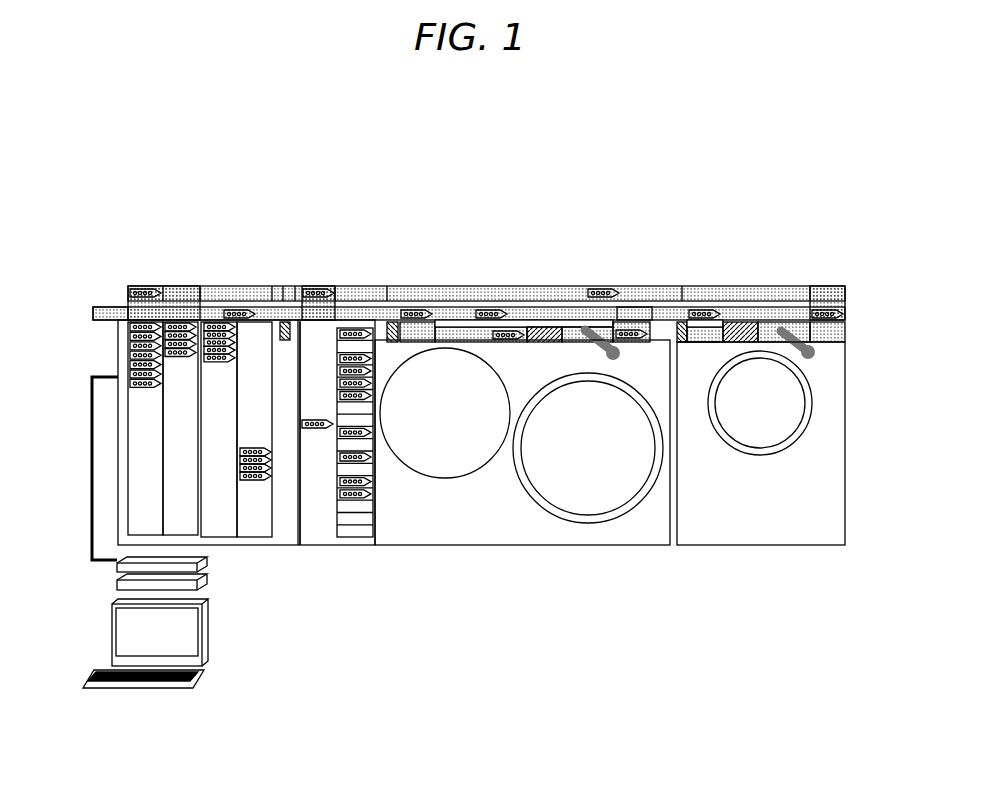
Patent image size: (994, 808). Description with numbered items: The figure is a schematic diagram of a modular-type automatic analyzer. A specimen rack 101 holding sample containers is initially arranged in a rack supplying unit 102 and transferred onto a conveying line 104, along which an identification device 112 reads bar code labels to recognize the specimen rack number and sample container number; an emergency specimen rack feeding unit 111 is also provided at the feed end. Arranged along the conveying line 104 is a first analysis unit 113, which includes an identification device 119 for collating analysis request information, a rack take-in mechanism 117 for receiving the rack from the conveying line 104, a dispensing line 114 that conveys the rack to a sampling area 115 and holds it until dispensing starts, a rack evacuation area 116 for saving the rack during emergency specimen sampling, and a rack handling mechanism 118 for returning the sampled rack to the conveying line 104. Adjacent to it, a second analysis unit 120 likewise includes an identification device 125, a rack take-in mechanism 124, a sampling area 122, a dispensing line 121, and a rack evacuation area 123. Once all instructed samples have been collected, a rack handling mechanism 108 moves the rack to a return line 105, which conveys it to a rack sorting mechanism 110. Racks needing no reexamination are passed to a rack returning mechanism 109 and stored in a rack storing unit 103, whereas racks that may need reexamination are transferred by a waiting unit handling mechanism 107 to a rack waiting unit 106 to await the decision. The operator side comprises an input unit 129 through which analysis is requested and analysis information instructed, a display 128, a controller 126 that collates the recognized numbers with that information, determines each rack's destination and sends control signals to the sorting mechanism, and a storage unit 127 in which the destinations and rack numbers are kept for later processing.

The specimen rack 101 is at (245, 515).
The rack supplying unit 102 is at (252, 480).
The rack storing unit 103 is at (182, 477).
The conveying line 104 is at (524, 307).
The return line 105 is at (358, 286).
The rack waiting unit 106 is at (348, 525).
The waiting unit handling mechanism 107 is at (318, 515).
The rack handling mechanism 108 is at (833, 286).
The rack returning mechanism 109 is at (169, 286).
The rack sorting mechanism 110 is at (313, 286).
The emergency specimen rack feeding unit 111 is at (106, 305).
The identification device 112 is at (283, 305).
The first analysis unit 113 is at (508, 512).
The dispensing line 114 is at (465, 332).
The sampling area 115 is at (575, 332).
The rack evacuation area 116 is at (543, 332).
The rack take-in mechanism 117 is at (422, 312).
The rack handling mechanism 118 is at (642, 307).
The identification device 119 is at (393, 307).
The second analysis unit 120 is at (805, 525).
The dispensing line 121 is at (702, 342).
The sampling area 122 is at (770, 333).
The rack evacuation area 123 is at (740, 330).
The rack take-in mechanism 124 is at (710, 310).
The identification device 125 is at (677, 300).
The controller 126 is at (157, 577).
The storage unit 127 is at (163, 560).
The display 128 is at (157, 633).
The input unit 129 is at (137, 690).